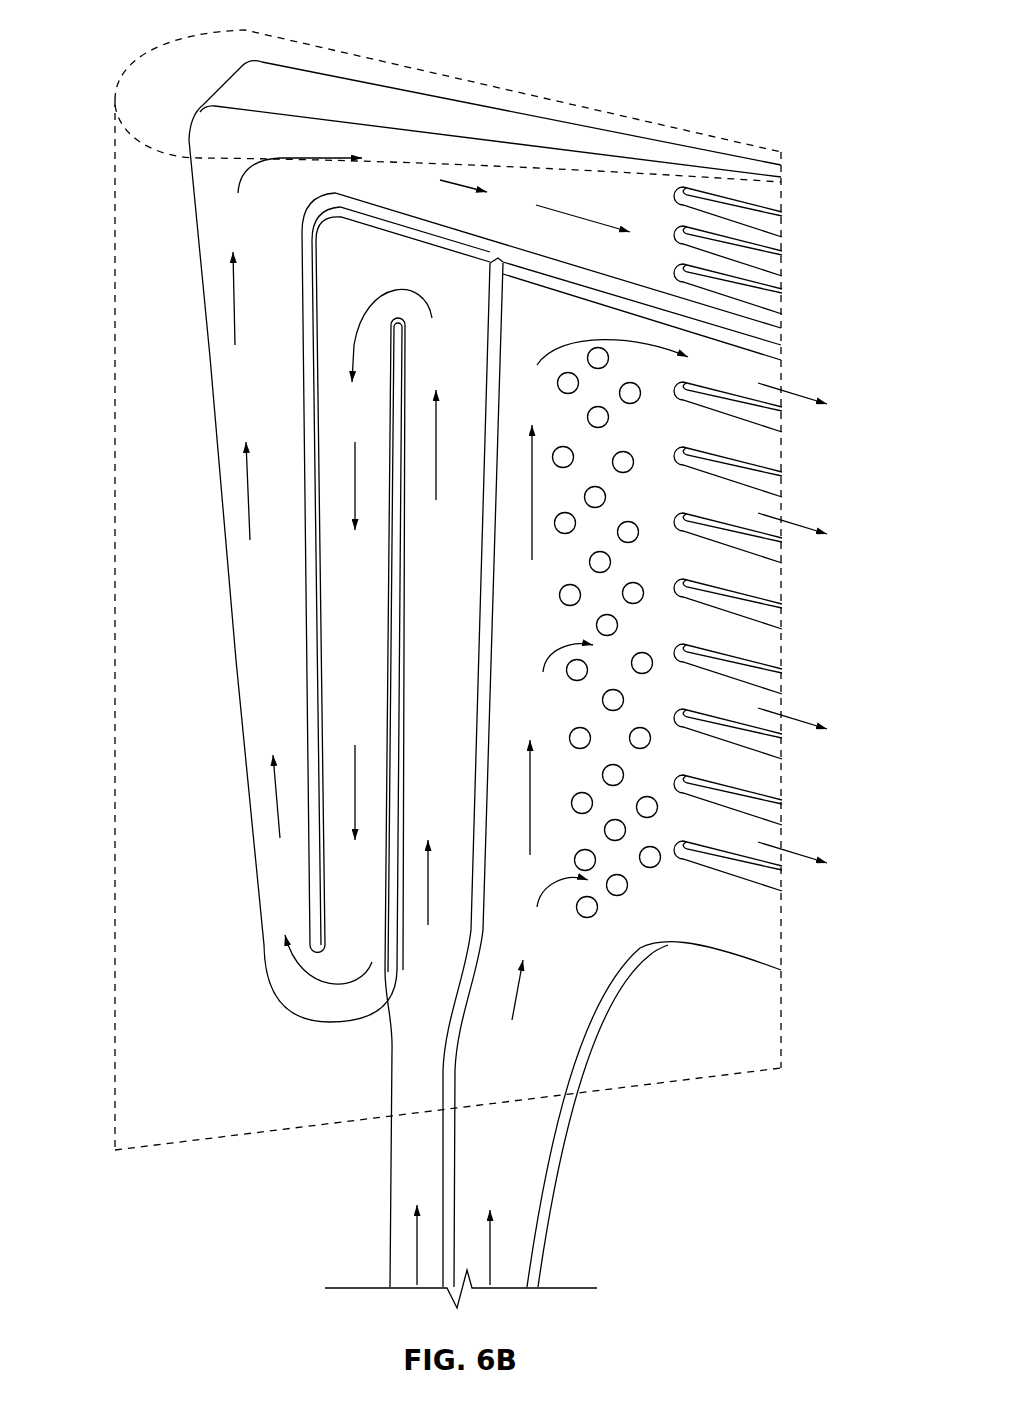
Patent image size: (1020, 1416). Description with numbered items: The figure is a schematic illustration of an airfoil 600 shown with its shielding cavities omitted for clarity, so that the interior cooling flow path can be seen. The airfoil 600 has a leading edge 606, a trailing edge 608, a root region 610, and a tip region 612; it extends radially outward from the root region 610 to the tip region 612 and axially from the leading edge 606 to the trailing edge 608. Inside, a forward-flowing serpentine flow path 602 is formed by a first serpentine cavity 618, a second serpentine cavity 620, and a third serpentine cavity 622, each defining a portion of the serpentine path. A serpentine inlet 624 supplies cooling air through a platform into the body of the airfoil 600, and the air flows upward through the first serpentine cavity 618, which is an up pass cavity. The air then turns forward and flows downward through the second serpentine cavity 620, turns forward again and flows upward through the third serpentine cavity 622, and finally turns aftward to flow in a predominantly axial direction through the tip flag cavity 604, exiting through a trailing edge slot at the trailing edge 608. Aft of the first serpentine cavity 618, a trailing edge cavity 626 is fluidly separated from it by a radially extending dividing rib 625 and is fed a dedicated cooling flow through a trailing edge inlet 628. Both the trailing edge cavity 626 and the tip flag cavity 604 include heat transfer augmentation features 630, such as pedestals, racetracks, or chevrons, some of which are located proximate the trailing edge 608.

The airfoil 600 is at (130, 30).
The forward-flowing serpentine flow path 602 is at (253, 853).
The tip flag cavity 604 is at (592, 214).
The leading edge 606 is at (115, 625).
The trailing edge 608 is at (781, 345).
The root region 610 is at (100, 1130).
The tip region 612 is at (612, 82).
The first serpentine cavity 618 is at (460, 594).
The second serpentine cavity 620 is at (333, 599).
The third serpentine cavity 622 is at (248, 626).
The serpentine inlet 624 is at (400, 1220).
The dividing rib 625 is at (482, 655).
The trailing edge cavity 626 is at (505, 719).
The trailing edge inlet 628 is at (512, 1168).
The heat transfer augmentation features 630 is at (760, 262).